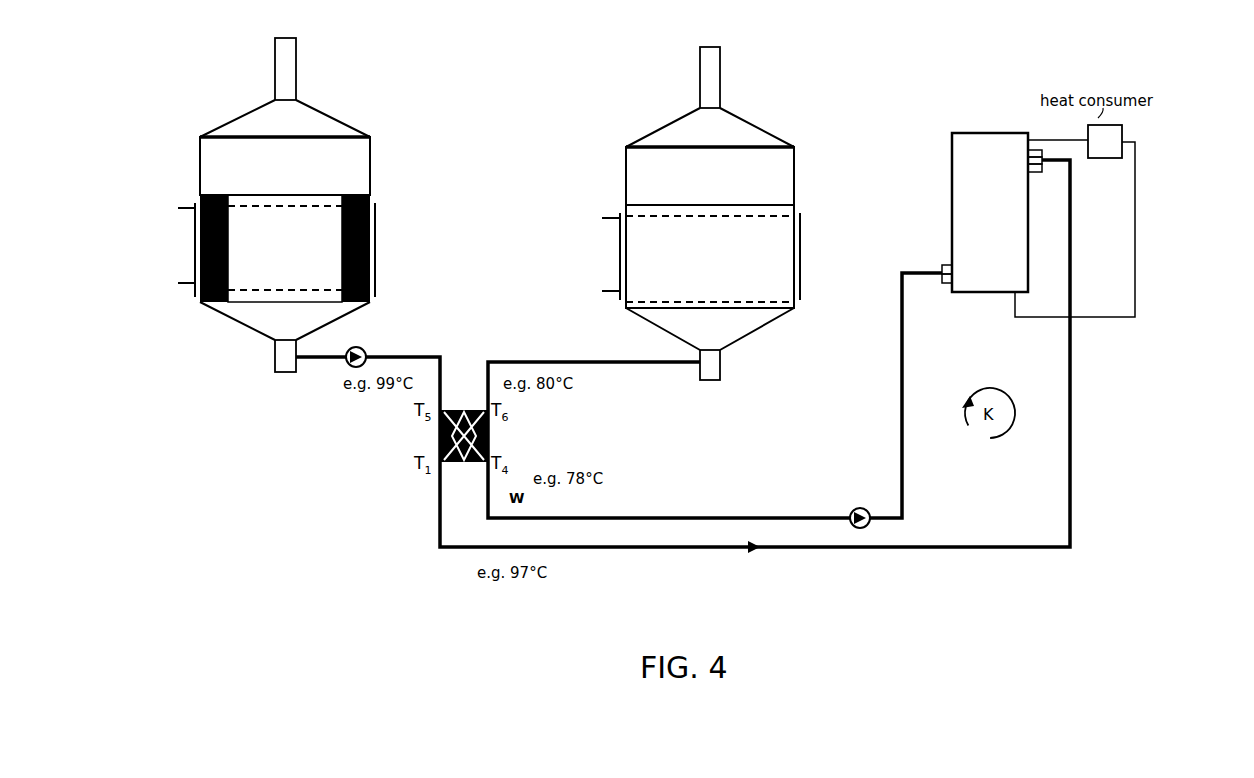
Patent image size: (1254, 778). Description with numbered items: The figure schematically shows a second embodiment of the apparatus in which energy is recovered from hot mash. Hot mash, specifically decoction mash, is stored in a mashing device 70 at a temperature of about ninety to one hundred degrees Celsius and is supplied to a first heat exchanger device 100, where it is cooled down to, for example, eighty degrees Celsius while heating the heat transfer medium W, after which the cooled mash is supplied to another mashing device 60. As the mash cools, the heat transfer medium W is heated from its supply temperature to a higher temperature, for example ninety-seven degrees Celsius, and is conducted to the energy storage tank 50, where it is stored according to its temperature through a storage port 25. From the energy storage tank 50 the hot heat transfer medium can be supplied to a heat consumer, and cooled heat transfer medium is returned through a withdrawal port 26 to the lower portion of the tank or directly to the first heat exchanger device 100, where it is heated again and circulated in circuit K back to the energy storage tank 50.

The mashing device 70 is at (373, 160).
The mashing device 60 is at (797, 166).
The first heat exchanger device 100 is at (489, 440).
The energy storage tank 50 is at (950, 168).
The storage port 25 is at (1040, 173).
The withdrawal port 26 is at (941, 266).